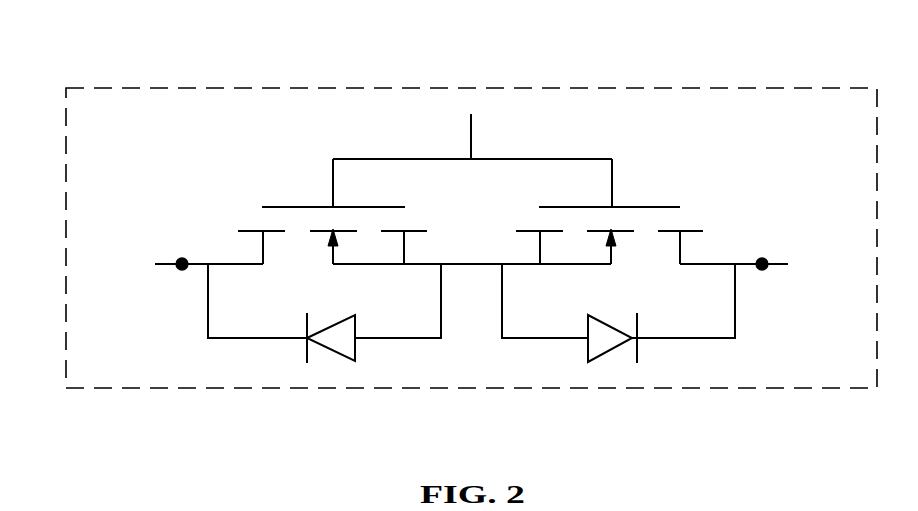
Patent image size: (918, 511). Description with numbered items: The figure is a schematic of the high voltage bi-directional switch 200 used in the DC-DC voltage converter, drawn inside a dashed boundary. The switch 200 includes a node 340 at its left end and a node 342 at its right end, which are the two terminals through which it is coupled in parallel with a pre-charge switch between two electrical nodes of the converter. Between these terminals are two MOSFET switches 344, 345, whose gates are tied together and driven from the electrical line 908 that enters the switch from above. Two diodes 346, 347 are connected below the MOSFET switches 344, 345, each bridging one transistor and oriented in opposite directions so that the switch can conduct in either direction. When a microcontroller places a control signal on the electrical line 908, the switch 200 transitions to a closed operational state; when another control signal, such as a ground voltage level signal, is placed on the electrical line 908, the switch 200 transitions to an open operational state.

The high voltage bi-directional switch 200 is at (730, 88).
The electrical line 908 is at (471, 137).
The MOSFET switch 344 is at (297, 207).
The MOSFET switch 345 is at (648, 207).
The node 340 is at (183, 271).
The node 342 is at (762, 270).
The diode 346 is at (333, 351).
The diode 347 is at (610, 350).